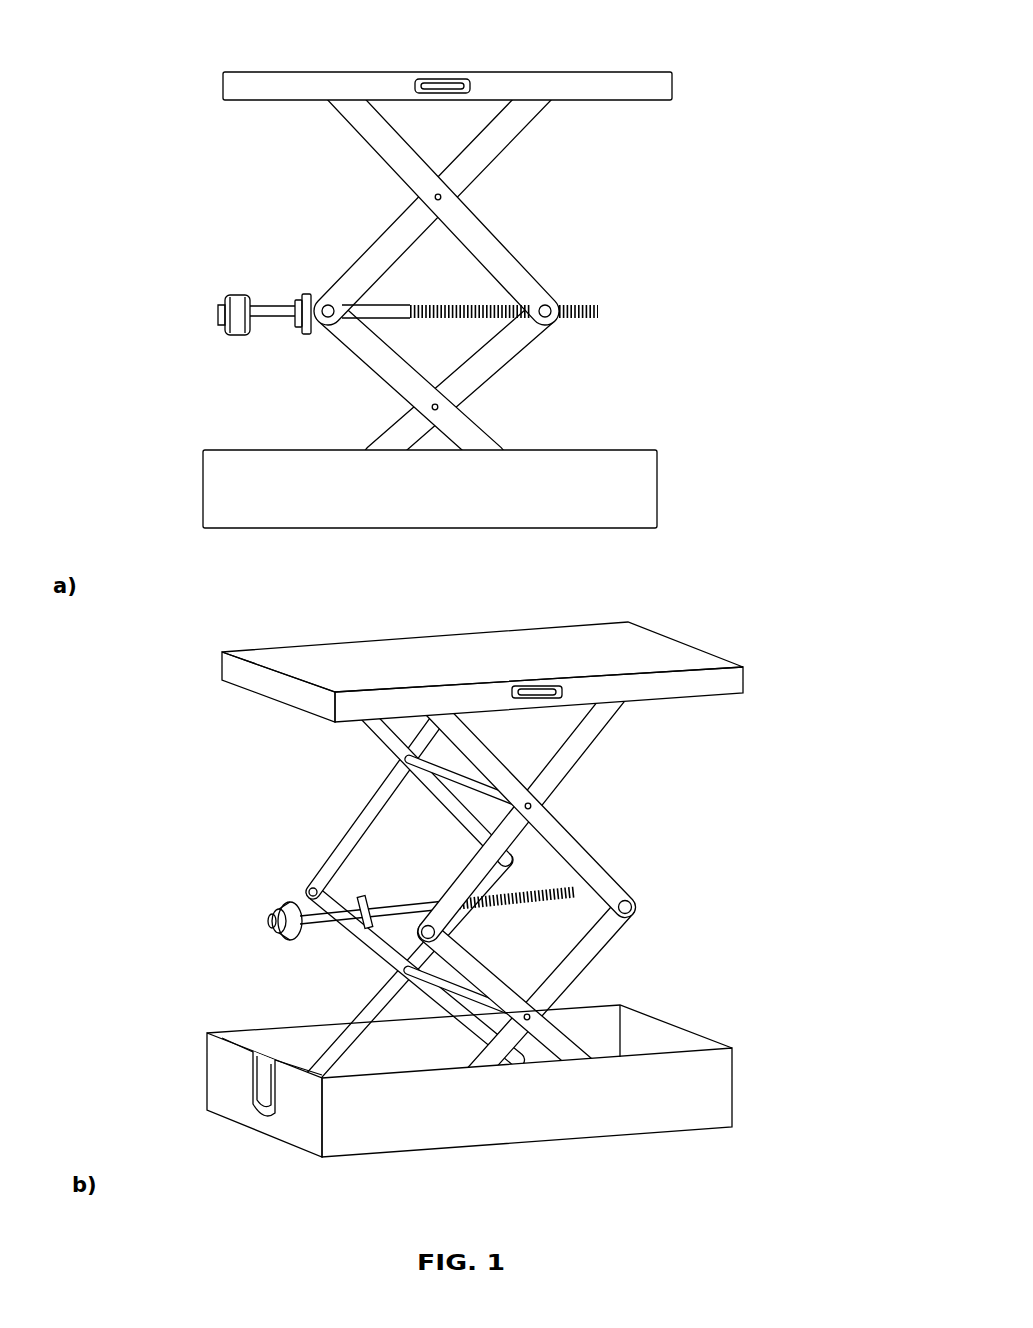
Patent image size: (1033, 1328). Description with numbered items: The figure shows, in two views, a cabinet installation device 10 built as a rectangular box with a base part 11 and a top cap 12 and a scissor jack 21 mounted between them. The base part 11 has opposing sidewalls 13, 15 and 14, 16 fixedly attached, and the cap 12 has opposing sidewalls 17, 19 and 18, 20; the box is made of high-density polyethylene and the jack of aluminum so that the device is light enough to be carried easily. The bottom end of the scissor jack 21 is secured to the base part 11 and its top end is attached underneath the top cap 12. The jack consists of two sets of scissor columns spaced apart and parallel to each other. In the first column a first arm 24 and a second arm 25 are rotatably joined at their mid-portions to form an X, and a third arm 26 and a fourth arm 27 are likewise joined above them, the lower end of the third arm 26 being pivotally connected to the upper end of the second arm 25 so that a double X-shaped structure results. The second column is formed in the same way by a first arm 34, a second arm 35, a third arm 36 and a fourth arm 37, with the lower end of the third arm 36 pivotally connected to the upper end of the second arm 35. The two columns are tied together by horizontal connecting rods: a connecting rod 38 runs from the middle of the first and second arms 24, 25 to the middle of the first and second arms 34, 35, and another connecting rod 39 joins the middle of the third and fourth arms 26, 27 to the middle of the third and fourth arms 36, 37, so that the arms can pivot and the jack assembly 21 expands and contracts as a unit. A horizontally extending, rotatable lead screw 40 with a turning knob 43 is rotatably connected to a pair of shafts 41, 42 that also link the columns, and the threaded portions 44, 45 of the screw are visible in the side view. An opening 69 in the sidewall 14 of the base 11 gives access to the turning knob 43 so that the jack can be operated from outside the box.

The cabinet installation device 10 is at (780, 54).
The base part 11 is at (658, 526).
The top cap 12 is at (672, 100).
The sidewall of base part 13 is at (258, 508).
The sidewall of base part 14 is at (203, 482).
The sidewall of base part 15 is at (272, 1038).
The sidewall of base part 16 is at (657, 472).
The sidewall of top cap 17 is at (560, 80).
The sidewall of top cap 18 is at (223, 82).
The sidewall of top cap 19 is at (322, 642).
The sidewall of top cap 20 is at (672, 78).
The scissor jack 21 is at (162, 125).
The first arm 24 is at (384, 368).
The second arm 25 is at (498, 362).
The third arm 26 is at (498, 246).
The fourth arm 27 is at (388, 240).
The first arm 34 is at (367, 940).
The second arm 35 is at (385, 1018).
The third arm 36 is at (380, 735).
The fourth arm 37 is at (353, 863).
The connecting rod 38 is at (458, 992).
The connecting rod 39 is at (418, 765).
The lead screw 40 is at (224, 313).
The shaft 41 is at (372, 910).
The shaft 42 is at (575, 895).
The turning knob 43 is at (238, 296).
The threaded spindle 44 is at (390, 305).
The spindle end 45 is at (586, 305).
The opening 69 is at (262, 1097).